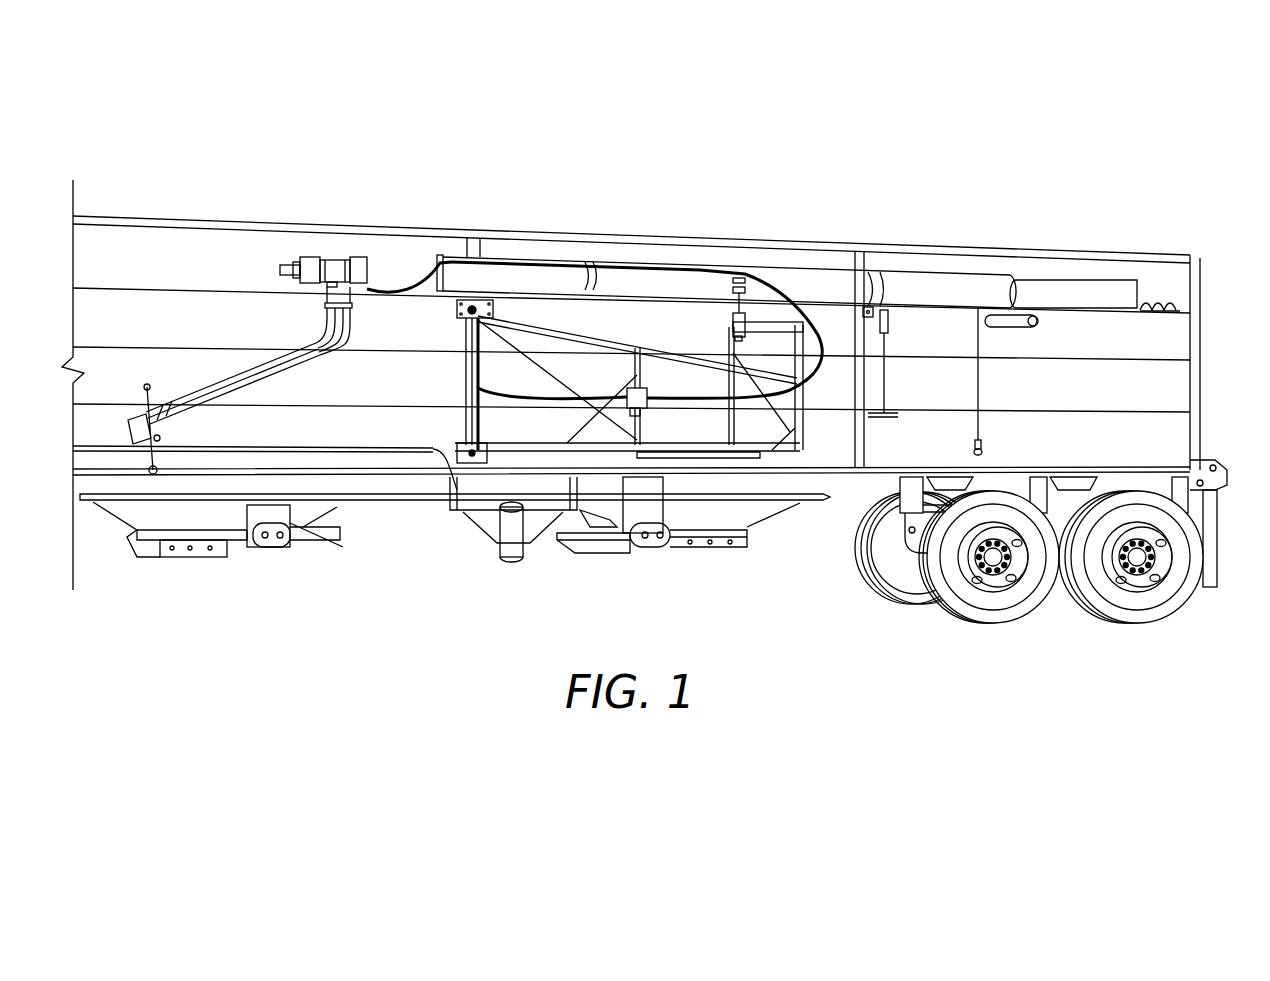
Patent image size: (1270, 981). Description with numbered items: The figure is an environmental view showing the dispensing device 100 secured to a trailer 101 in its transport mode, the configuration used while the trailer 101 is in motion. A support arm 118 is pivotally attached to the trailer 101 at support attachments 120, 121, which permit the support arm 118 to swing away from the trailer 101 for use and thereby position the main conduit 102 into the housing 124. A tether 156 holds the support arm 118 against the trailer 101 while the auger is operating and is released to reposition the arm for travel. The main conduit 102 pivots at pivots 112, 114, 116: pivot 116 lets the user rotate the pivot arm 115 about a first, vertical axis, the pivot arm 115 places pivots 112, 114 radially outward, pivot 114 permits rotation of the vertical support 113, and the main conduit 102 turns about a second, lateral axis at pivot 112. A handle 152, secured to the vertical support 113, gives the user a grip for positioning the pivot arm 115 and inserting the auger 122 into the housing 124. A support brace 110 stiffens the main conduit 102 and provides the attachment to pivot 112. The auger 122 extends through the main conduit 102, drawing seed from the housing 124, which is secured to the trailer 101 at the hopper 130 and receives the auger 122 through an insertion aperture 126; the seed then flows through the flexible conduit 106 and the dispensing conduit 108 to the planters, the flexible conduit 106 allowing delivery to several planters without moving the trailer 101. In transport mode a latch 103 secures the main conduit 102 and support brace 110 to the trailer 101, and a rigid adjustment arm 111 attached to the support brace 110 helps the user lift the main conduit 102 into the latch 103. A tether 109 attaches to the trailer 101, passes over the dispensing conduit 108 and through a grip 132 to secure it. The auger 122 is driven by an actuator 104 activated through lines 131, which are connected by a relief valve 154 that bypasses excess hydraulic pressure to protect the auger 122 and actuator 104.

The dispensing device 100 is at (374, 252).
The trailer 101 is at (1000, 250).
The main conduit 102 is at (357, 262).
The latch 103 is at (877, 420).
The actuator 104 is at (282, 268).
The flexible conduit 106 is at (327, 323).
The dispensing conduit 108 is at (183, 420).
The tether 109 is at (157, 398).
The support brace 110 is at (597, 262).
The adjustment arm 111 is at (983, 452).
The pivot 112 is at (742, 300).
The vertical support 113 is at (732, 318).
The pivot 114 is at (766, 318).
The pivot arm 115 is at (786, 300).
The pivot 116 is at (800, 318).
The support arm 118 is at (535, 325).
The support attachment 120 is at (436, 457).
The support attachment 121 is at (482, 305).
The auger 122 is at (1158, 297).
The housing 124 is at (483, 523).
The insertion aperture 126 is at (507, 530).
The hopper 130 is at (752, 518).
The lines 131 is at (690, 405).
The grip 132 is at (140, 423).
The handle 152 is at (718, 348).
The relief valve 154 is at (648, 410).
The tether 156 is at (645, 410).